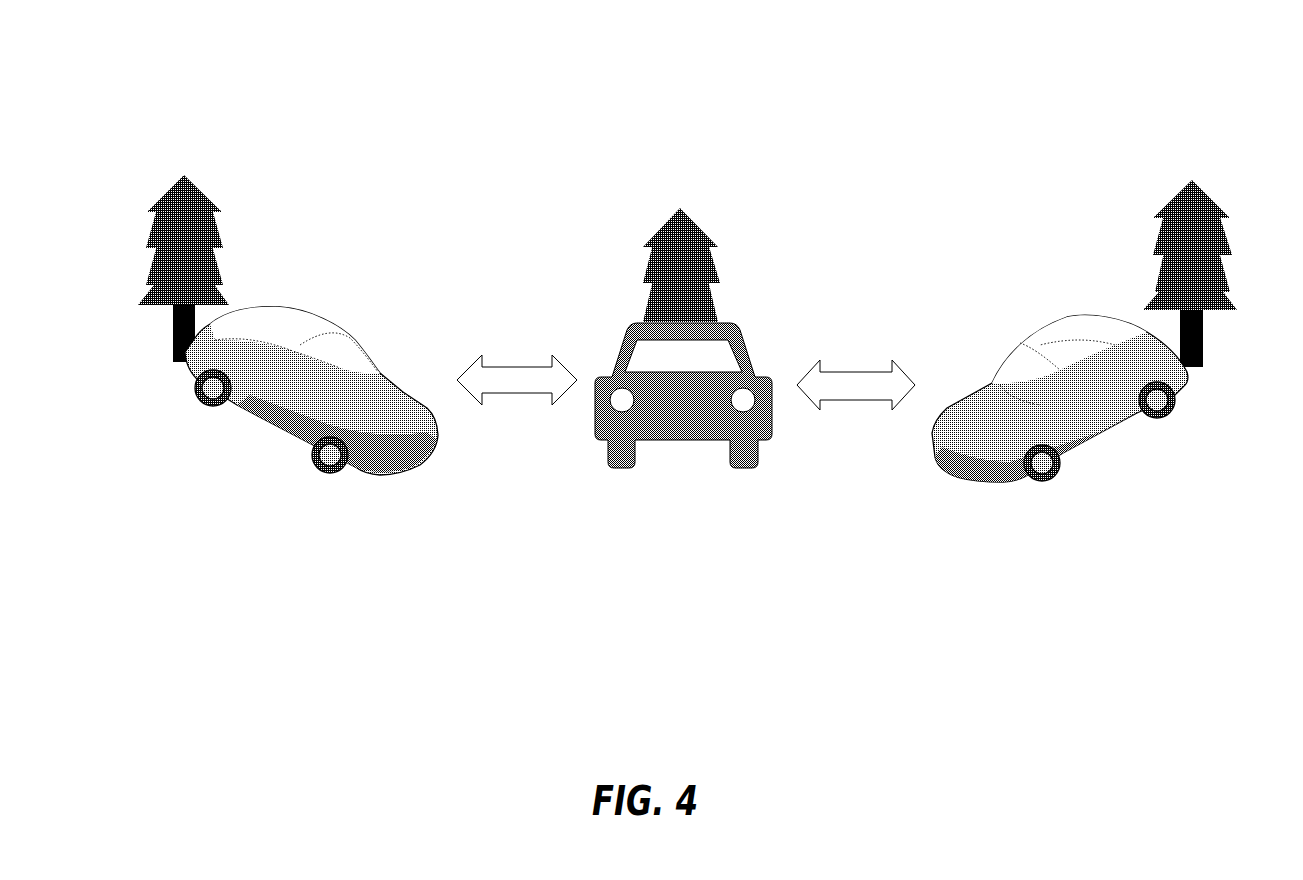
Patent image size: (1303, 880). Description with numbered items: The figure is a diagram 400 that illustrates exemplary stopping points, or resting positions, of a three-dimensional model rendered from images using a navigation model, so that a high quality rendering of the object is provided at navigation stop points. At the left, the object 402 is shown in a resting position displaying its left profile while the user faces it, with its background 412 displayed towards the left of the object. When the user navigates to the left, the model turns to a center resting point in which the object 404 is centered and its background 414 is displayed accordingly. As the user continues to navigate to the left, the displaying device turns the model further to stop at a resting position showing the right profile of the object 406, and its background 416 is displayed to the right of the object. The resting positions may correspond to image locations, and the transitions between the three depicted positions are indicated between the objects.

The vehicle communication environment 400 is at (1182, 41).
The first vehicle 402 is at (382, 328).
The second vehicle 404 is at (754, 318).
The third vehicle 406 is at (1003, 328).
The first tree 412 is at (234, 194).
The second tree 414 is at (727, 222).
The third tree 416 is at (1135, 198).